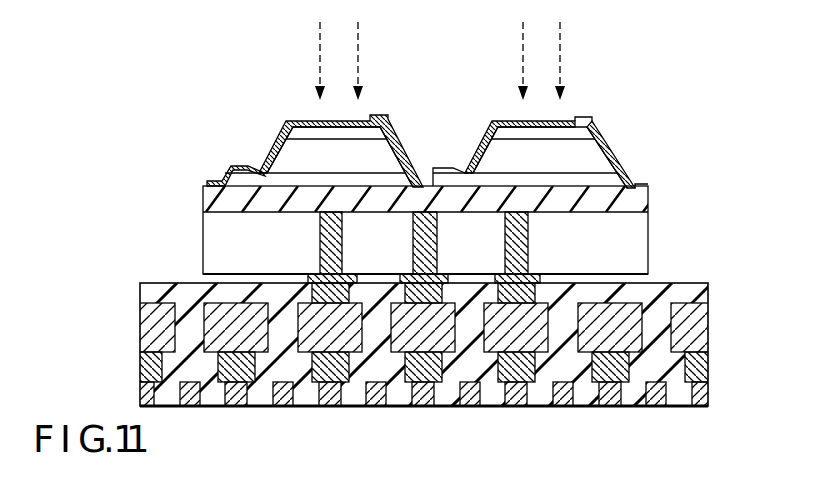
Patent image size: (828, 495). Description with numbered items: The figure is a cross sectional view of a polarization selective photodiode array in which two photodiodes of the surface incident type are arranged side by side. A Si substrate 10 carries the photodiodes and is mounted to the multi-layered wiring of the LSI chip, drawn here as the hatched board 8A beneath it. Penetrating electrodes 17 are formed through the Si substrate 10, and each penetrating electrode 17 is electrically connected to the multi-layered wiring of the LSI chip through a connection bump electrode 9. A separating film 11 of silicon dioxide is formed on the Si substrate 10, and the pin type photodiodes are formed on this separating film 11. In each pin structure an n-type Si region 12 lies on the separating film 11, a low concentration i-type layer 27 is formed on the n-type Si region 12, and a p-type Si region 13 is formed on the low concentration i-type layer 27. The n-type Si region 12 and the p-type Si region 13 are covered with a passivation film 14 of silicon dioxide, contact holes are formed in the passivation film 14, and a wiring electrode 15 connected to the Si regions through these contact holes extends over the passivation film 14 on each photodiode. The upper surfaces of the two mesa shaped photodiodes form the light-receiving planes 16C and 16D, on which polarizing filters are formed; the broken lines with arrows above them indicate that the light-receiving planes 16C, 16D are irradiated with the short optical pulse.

The wiring board 8A is at (713, 286).
The connection bump electrode 9 is at (292, 270).
The Si substrate 10 is at (640, 243).
The separating film 11 is at (640, 203).
The n-type Si region 12 is at (478, 178).
The p-type Si region 13 is at (593, 122).
The passivation film 14 is at (620, 167).
The wiring electrode 15 is at (608, 143).
The light-receiving plane 16C is at (563, 117).
The light-receiving plane 16D is at (317, 110).
The penetrating electrode 17 is at (328, 248).
The low concentration (i-type) layer 27 is at (503, 155).